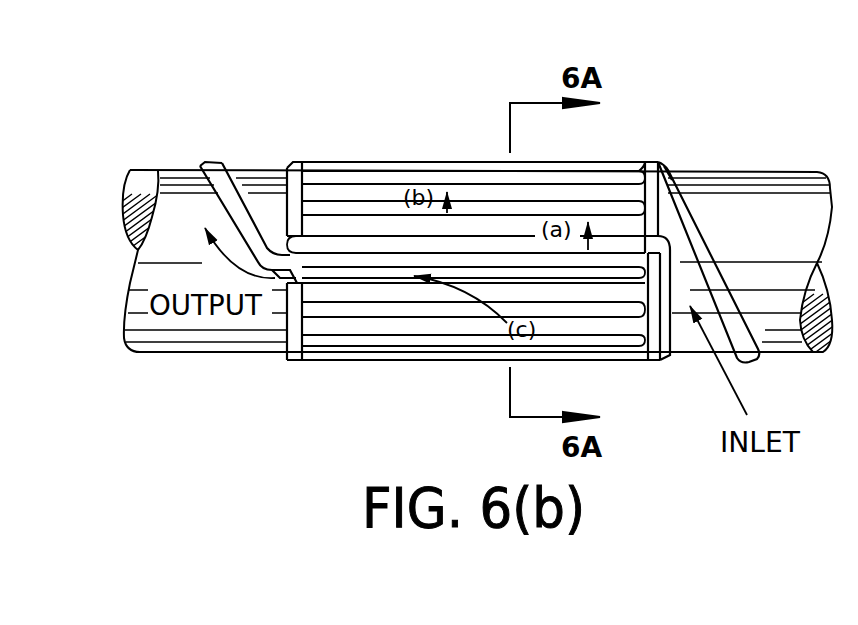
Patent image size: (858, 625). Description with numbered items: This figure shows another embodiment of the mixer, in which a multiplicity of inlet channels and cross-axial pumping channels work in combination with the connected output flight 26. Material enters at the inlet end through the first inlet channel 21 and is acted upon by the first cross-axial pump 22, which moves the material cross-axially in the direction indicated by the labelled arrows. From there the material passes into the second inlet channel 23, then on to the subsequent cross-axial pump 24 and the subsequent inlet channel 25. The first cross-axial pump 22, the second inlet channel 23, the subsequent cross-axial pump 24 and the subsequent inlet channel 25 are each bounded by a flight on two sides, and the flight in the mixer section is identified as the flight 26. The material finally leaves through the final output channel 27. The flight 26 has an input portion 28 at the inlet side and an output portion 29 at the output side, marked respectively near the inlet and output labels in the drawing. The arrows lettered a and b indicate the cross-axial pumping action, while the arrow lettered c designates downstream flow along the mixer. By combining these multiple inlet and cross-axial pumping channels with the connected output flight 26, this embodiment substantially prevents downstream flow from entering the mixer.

The first inlet channel 21 is at (450, 301).
The first cross-axial pump 22 is at (620, 226).
The second inlet channel 23 is at (603, 208).
The subsequent cross-axial pump 24 is at (363, 196).
The subsequent inlet channel 25 is at (342, 183).
The flight 26 is at (478, 325).
The final output channel 27 is at (550, 273).
The input portion of flight 28 is at (697, 250).
The output portion of flight 29 is at (243, 212).